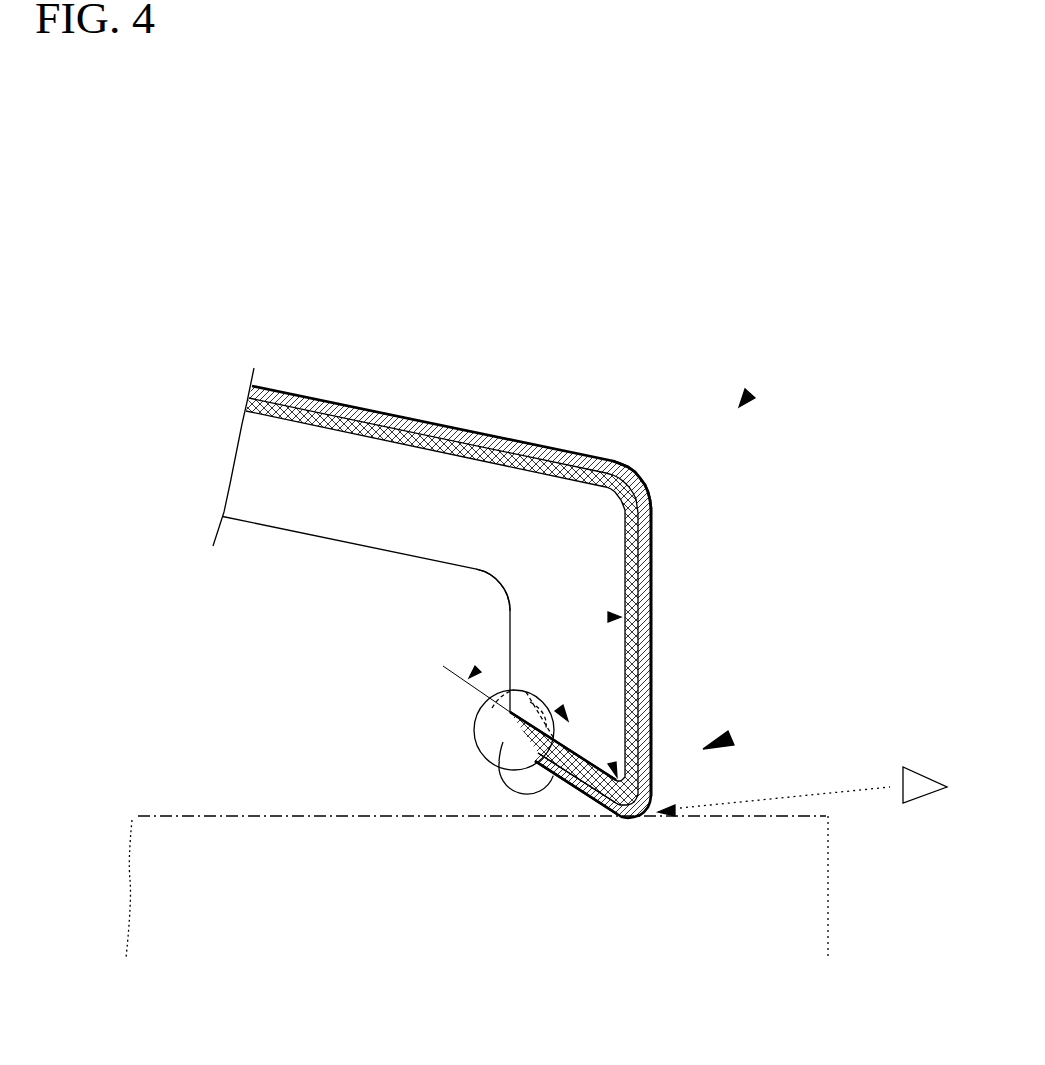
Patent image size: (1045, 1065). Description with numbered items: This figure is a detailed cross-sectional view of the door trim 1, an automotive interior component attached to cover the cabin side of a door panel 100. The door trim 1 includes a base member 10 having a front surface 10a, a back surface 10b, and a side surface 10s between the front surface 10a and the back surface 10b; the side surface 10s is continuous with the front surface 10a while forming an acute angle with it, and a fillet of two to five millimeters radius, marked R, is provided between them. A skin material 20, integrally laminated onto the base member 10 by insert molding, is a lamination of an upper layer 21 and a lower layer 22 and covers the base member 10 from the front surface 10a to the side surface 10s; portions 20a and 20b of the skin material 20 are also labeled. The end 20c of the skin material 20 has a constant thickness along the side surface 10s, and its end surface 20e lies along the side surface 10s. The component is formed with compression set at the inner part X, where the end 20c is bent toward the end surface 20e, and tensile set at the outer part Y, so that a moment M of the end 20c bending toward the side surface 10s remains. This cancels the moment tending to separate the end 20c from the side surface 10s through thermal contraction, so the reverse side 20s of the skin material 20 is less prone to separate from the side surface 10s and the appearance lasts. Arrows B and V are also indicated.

The door trim 1 is at (746, 400).
The base member 10 is at (436, 613).
The front surface 10a is at (500, 586).
The back surface 10b is at (508, 626).
The side surface 10s is at (601, 795).
The skin material 20 is at (526, 612).
The side wall portion of frame 20a is at (652, 610).
The bent portion of frame 20b is at (652, 568).
The end of the skin material 20c is at (541, 797).
The end surface of the skin material 20e is at (496, 778).
The reverse side of the skin material 20s is at (580, 750).
The upper layer 21 is at (462, 445).
The lower layer 22 is at (536, 452).
The door panel 100 is at (178, 815).
The inner part X is at (563, 714).
The corner radius R is at (613, 768).
The outer part Y is at (475, 728).
The moment M is at (498, 755).
The direction B is at (733, 736).
The viewing direction V is at (843, 790).